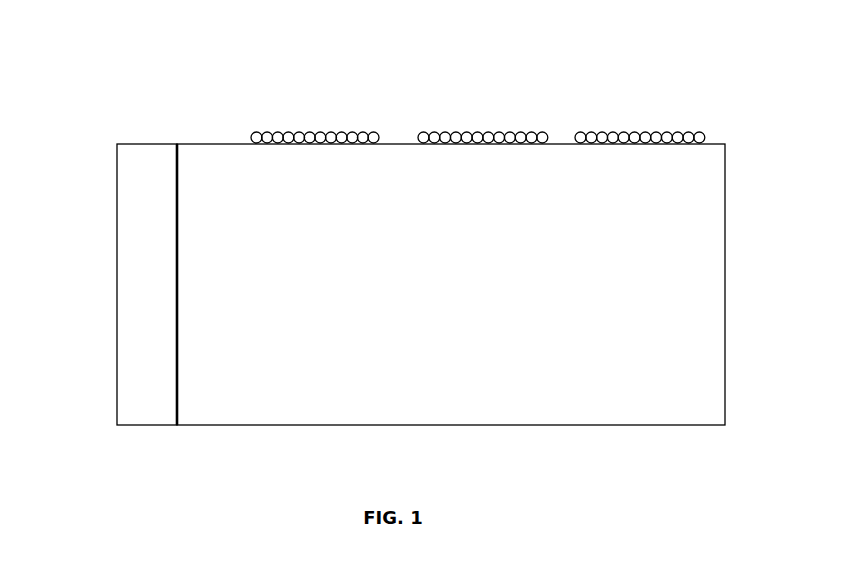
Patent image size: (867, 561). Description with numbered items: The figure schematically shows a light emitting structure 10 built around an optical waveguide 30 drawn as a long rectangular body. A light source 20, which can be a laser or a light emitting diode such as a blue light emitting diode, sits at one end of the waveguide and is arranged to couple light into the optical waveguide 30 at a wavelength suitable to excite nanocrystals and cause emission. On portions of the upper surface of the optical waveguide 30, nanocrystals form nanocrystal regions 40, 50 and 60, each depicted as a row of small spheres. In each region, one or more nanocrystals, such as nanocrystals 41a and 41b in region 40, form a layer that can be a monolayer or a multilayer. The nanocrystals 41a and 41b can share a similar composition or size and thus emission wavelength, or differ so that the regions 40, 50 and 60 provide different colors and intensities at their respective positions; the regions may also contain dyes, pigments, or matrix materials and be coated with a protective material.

The light emitting structure 10 is at (265, 74).
The light source 20 is at (117, 275).
The optical waveguide 30 is at (422, 425).
The nanocrystal region 40 is at (310, 130).
The nanocrystal 41a is at (363, 131).
The nanocrystal 41b is at (374, 130).
The nanocrystal region 50 is at (472, 132).
The nanocrystal region 60 is at (630, 132).